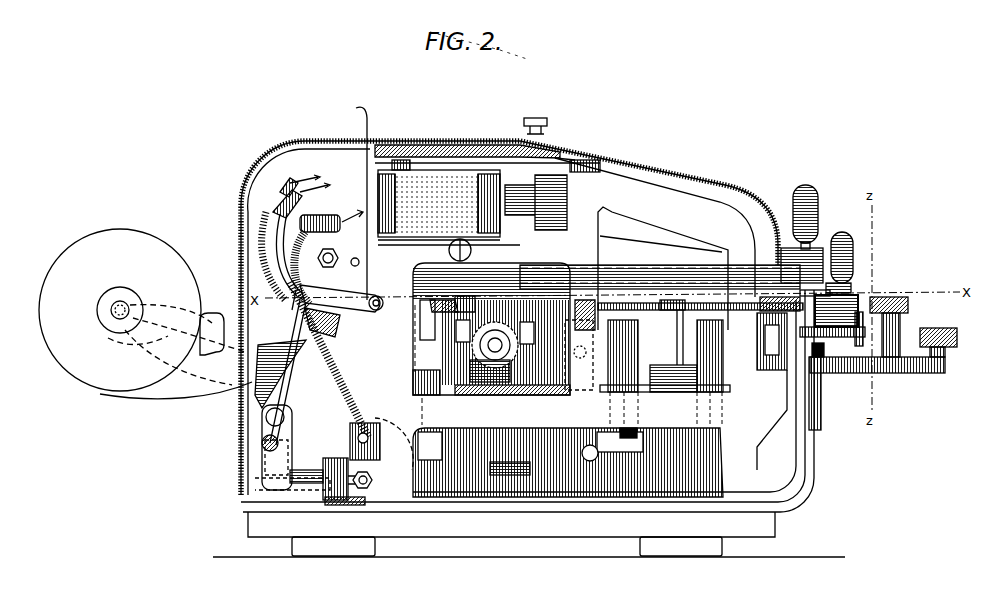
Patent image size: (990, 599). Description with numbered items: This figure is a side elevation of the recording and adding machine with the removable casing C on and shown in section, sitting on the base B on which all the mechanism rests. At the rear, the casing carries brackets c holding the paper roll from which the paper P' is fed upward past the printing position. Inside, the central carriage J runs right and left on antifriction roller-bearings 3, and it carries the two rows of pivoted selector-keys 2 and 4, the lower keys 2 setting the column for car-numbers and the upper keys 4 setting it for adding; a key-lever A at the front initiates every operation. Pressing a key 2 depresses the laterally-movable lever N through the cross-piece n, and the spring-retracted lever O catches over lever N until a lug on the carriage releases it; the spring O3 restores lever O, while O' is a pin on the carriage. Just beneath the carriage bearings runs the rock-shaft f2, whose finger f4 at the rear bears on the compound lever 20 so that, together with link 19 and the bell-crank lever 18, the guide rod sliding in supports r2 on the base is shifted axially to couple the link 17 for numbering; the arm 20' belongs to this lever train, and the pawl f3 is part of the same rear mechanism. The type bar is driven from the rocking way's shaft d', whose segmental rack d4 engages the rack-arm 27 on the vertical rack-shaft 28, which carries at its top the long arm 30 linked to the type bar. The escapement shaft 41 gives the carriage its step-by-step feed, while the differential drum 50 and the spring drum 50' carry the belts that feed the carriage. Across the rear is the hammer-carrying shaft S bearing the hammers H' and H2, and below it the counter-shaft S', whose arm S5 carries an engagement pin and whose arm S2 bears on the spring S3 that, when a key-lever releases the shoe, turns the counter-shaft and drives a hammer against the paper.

The removable casing C is at (254, 181).
The paper P' is at (216, 266).
The brackets c is at (207, 313).
The long arm 30 is at (487, 140).
The vertical rack-shaft 28 is at (588, 169).
The finger f4 is at (447, 290).
The shaft 41 is at (491, 338).
The rock-shaft f2 is at (477, 337).
The lever arm 20' is at (423, 316).
The carriage J is at (652, 268).
The antifriction roller-bearings 3 is at (700, 301).
The rack-arm 27 is at (585, 310).
The feed pawl f3 is at (672, 310).
The segmental rack d4 is at (640, 345).
The shaft d' is at (579, 355).
The differential drum 50 is at (666, 372).
The drum 50' is at (679, 381).
The base B is at (600, 405).
The selector-keys 4 is at (821, 208).
The selector-keys 2 is at (855, 246).
The plate O' is at (832, 287).
The cross-piece n is at (826, 324).
The laterally-movable lever N is at (865, 329).
The pin O3 is at (828, 347).
The spring-retracted lever O is at (823, 393).
The key-levers A is at (883, 335).
The hammer H2 is at (293, 185).
The hammer H' is at (301, 200).
The hammer-carrying shaft S is at (336, 332).
The link 17 is at (292, 333).
The link 19 is at (292, 320).
The compound lever 20 is at (371, 393).
The bell-crank lever 18 is at (285, 425).
The supports r2 is at (288, 455).
The arm S5 is at (292, 472).
The arm S2 is at (306, 485).
The counter-shaft S' is at (357, 479).
The spring S3 is at (340, 503).